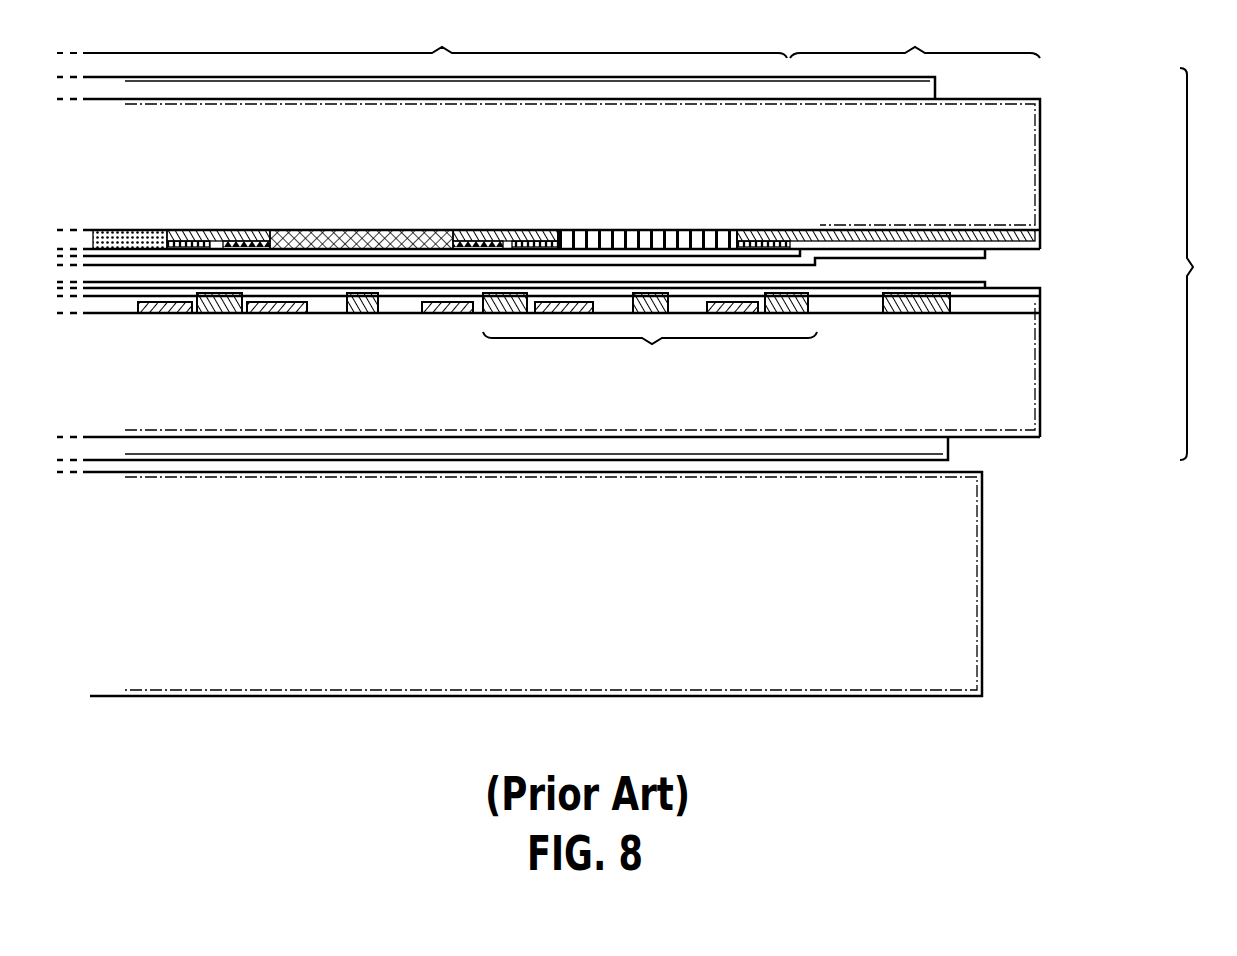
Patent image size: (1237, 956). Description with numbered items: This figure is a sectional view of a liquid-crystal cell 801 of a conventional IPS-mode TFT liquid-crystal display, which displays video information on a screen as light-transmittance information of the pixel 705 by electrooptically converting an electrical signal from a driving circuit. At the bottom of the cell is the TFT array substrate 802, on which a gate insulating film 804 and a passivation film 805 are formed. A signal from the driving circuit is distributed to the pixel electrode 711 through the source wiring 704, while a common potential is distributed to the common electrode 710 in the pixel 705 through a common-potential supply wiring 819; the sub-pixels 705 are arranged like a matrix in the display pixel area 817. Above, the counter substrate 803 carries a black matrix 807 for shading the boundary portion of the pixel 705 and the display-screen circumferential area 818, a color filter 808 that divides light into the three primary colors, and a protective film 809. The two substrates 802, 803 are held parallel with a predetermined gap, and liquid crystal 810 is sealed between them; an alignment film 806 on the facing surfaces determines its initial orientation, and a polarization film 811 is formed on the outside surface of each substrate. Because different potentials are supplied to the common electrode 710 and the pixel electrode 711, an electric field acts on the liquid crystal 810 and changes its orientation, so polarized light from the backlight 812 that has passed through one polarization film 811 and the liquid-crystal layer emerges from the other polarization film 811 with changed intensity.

The liquid-crystal cell 801 is at (1205, 264).
The TFT array substrate 802 is at (1032, 400).
The counter substrate 803 is at (1032, 130).
The gate insulating film 804 is at (1040, 303).
The passivation film 805 is at (1040, 288).
The alignment film 806 is at (114, 287).
The black matrix 807 is at (1015, 232).
The color filter 808 is at (131, 230).
The protective film 809 is at (1033, 247).
The liquid crystal 810 is at (985, 270).
The polarization film 811 is at (923, 87).
The backlight 812 is at (975, 623).
The display pixel area 817 is at (422, 38).
The display-screen circumferential area 818 is at (915, 38).
The common-potential supply wiring 819 is at (950, 305).
The source wiring 704 is at (213, 314).
The pixel 705 is at (619, 334).
The common electrode 710 is at (278, 314).
The pixel electrode 711 is at (357, 314).